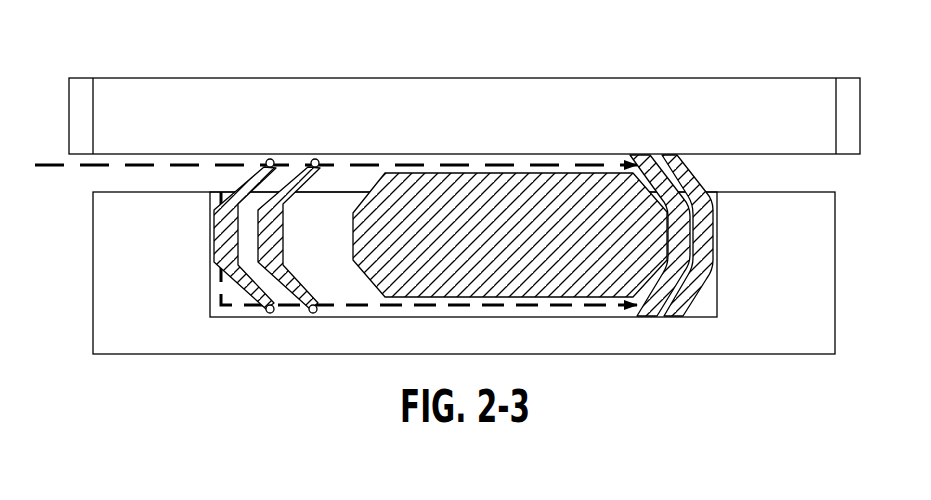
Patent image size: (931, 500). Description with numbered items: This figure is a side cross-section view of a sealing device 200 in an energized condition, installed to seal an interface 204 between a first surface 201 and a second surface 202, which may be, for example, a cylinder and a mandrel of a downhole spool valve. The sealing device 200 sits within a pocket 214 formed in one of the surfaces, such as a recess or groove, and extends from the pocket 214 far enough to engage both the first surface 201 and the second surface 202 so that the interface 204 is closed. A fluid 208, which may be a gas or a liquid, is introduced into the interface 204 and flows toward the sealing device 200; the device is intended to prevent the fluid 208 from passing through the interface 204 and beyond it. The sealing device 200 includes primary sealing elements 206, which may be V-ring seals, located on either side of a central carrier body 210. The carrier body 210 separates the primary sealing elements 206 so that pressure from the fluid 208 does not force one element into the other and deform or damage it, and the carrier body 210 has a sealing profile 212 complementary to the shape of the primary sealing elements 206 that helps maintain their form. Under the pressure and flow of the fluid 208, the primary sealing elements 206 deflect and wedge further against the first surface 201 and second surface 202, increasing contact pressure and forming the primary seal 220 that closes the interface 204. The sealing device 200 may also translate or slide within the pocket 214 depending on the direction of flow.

The sealing device 200 is at (798, 48).
The first surface 201 is at (789, 122).
The second surface 202 is at (787, 284).
The interface 204 is at (814, 171).
The primary sealing element 206 is at (259, 96).
The fluid 208 is at (43, 163).
The carrier body 210 is at (488, 193).
The sealing profile 212 is at (339, 186).
The pocket 214 is at (724, 302).
The primary seal 220 is at (659, 146).